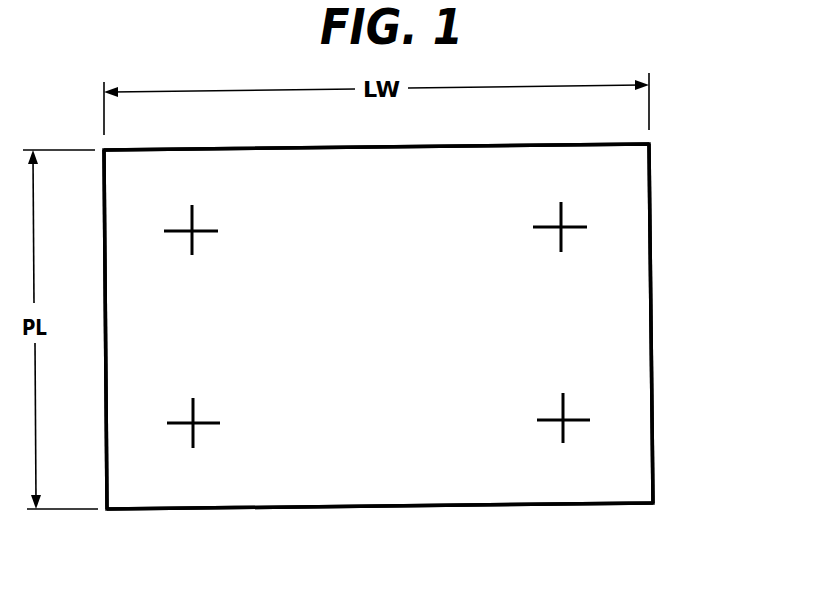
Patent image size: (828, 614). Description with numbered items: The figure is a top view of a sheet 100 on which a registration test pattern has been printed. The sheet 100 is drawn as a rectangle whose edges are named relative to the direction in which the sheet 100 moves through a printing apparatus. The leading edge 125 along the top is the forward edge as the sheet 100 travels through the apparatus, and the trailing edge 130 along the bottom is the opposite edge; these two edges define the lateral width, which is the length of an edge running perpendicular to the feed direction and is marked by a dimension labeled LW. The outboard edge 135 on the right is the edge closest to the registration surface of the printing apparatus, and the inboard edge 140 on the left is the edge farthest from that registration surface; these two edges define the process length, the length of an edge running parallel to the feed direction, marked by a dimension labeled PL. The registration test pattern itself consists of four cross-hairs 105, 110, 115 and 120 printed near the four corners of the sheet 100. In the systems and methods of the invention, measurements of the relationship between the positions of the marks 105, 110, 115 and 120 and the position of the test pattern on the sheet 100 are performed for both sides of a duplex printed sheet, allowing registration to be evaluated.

The sheet 100 is at (620, 189).
The cross-hair 105 is at (547, 222).
The cross-hair 110 is at (572, 417).
The cross-hair 115 is at (205, 227).
The cross-hair 120 is at (203, 420).
The leading edge 125 is at (438, 147).
The trailing edge 130 is at (528, 507).
The outboard edge 135 is at (652, 345).
The inboard edge 140 is at (104, 235).